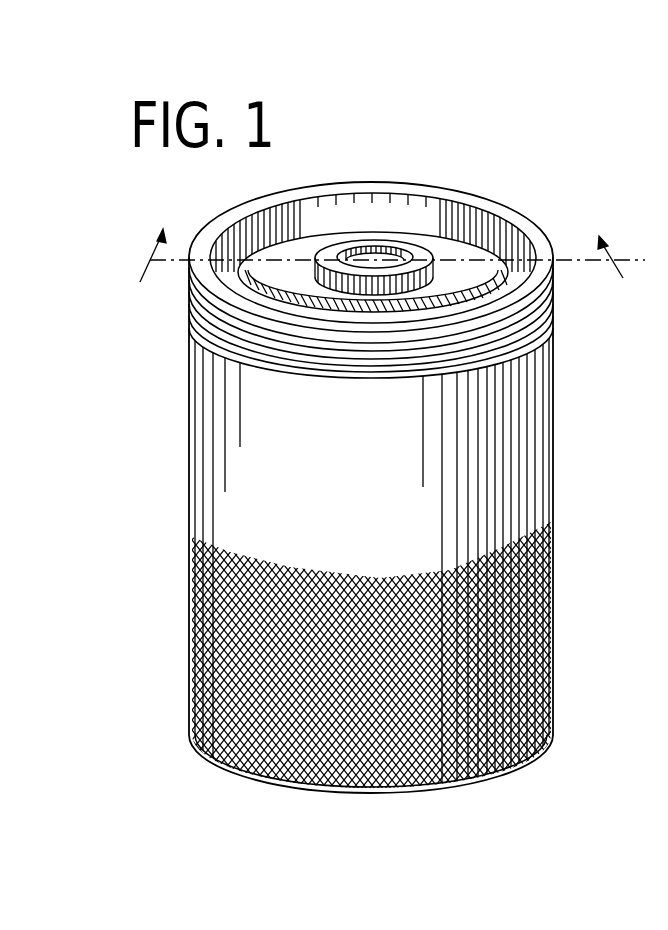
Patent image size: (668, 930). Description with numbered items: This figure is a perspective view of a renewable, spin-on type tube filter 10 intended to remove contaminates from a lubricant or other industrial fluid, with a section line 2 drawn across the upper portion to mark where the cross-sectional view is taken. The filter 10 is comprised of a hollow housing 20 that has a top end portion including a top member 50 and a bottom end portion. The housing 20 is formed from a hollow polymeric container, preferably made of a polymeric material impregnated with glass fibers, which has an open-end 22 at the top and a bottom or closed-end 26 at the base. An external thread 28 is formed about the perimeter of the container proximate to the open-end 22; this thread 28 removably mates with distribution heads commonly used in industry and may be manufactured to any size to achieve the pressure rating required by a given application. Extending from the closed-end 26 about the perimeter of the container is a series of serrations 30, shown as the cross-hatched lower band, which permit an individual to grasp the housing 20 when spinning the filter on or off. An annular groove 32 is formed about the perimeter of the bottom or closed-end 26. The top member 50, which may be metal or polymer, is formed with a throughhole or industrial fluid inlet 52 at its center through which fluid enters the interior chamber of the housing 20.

The filter 10 is at (158, 320).
The hollow housing 20 is at (257, 506).
The open-end 22 is at (417, 212).
The bottom or closed-end 26 is at (262, 771).
The external thread 28 is at (520, 317).
The serrations 30 is at (363, 597).
The annular groove 32 is at (507, 768).
The top member 50 is at (300, 252).
The throughhole or industrial fluid inlet 52 is at (367, 250).
The section line 2- 2 is at (383, 261).